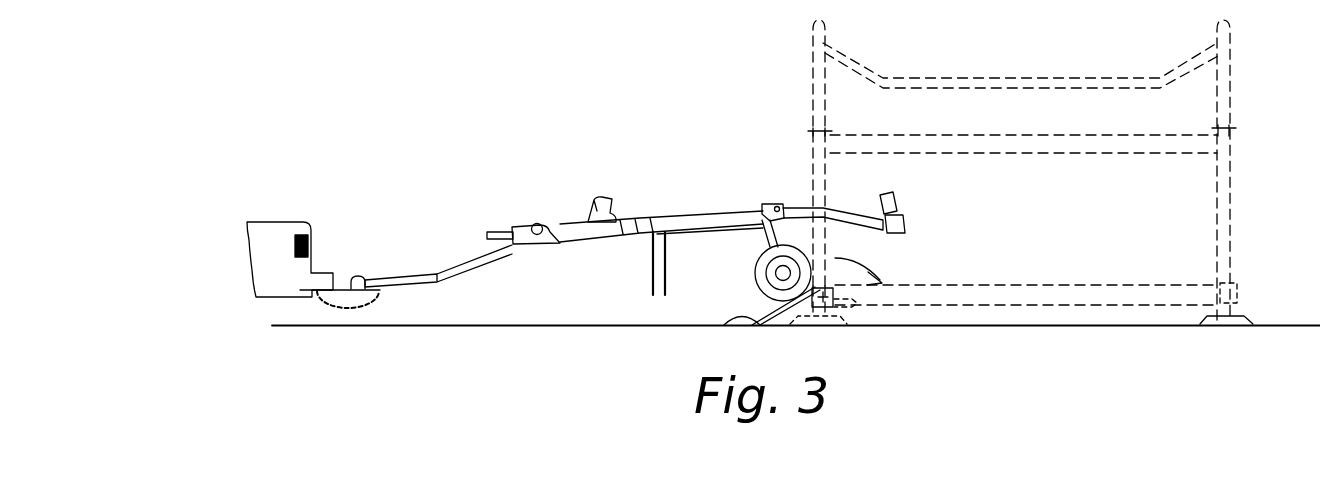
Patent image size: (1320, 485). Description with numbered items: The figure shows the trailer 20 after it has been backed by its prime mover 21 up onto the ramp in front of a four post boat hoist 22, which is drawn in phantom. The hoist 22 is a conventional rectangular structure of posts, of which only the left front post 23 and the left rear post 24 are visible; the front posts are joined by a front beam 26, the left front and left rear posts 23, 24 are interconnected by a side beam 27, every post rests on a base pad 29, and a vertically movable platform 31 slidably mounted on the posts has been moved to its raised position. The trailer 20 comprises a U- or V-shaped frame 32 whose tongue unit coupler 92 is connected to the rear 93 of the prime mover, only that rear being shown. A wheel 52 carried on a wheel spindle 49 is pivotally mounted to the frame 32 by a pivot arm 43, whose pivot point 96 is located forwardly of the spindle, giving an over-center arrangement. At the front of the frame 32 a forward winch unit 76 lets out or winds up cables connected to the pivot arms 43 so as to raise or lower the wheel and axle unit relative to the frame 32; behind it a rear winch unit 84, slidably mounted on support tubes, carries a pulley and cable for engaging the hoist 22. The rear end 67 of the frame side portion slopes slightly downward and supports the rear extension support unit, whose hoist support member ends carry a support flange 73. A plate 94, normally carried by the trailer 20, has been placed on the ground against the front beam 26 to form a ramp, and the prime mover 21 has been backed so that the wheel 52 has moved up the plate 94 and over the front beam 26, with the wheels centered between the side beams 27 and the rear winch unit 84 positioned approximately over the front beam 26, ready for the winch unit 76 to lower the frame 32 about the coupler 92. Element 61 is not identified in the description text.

The trailer 20 is at (505, 162).
The prime mover 21 is at (270, 228).
The boat hoist 22 is at (790, 47).
The left front post 23 is at (808, 88).
The left rear post 24 is at (1236, 80).
The front beam 26 is at (847, 328).
The side beam 27 is at (1110, 284).
The base pads 29 is at (805, 328).
The platform 31 is at (1100, 150).
The frame 32 is at (655, 210).
The arm 43 is at (762, 212).
The wheel spindle 49 is at (785, 273).
The wheel 52 is at (758, 284).
The hitch arm 61 is at (468, 268).
The rear end 67 is at (851, 210).
The support flange 73 is at (905, 223).
The winch unit 76 is at (530, 212).
The rear winch unit 84 is at (614, 200).
The tongue unit coupler 92 is at (371, 280).
The rear of prime mover 93 is at (312, 272).
The plate 94 is at (748, 318).
The pivot points 96 is at (775, 207).